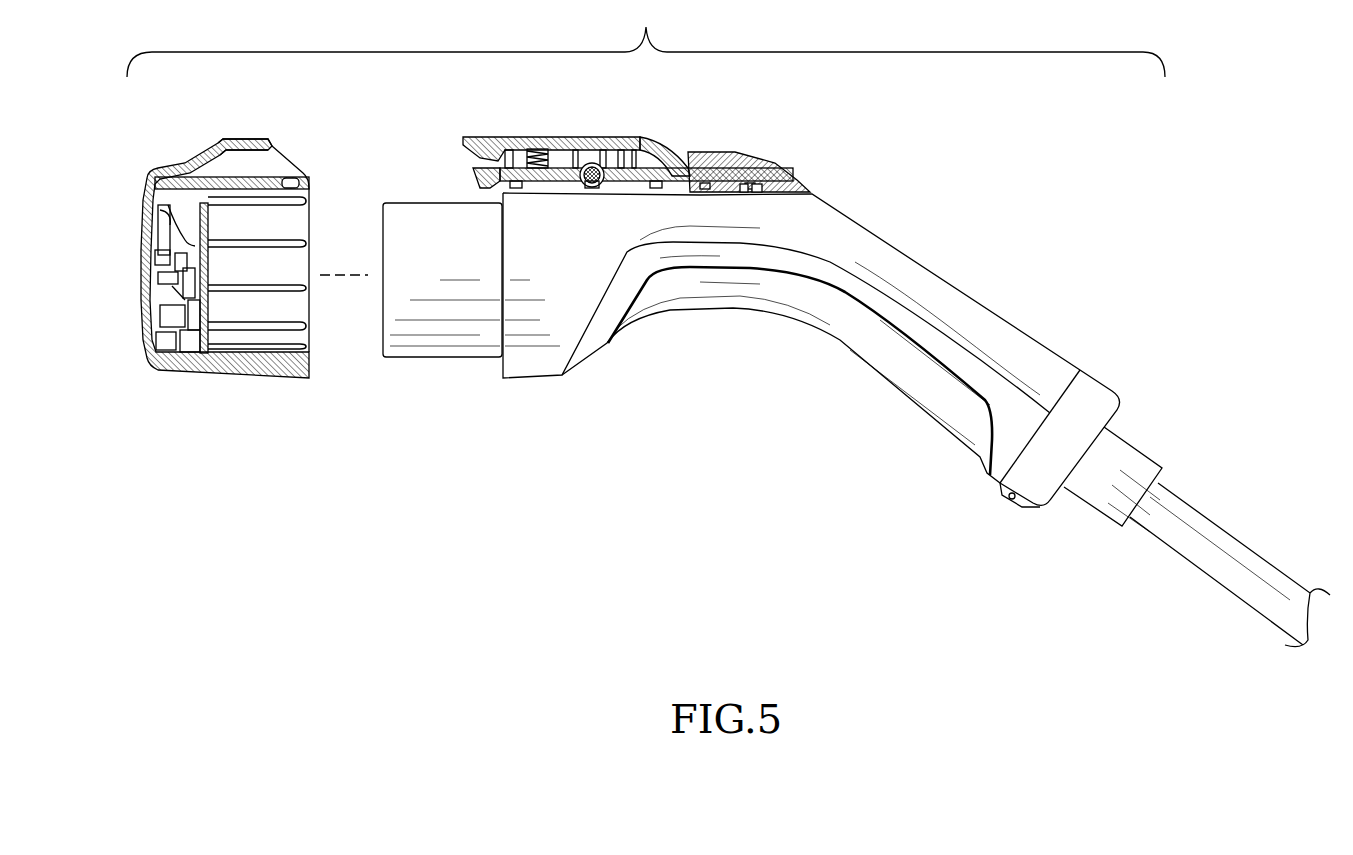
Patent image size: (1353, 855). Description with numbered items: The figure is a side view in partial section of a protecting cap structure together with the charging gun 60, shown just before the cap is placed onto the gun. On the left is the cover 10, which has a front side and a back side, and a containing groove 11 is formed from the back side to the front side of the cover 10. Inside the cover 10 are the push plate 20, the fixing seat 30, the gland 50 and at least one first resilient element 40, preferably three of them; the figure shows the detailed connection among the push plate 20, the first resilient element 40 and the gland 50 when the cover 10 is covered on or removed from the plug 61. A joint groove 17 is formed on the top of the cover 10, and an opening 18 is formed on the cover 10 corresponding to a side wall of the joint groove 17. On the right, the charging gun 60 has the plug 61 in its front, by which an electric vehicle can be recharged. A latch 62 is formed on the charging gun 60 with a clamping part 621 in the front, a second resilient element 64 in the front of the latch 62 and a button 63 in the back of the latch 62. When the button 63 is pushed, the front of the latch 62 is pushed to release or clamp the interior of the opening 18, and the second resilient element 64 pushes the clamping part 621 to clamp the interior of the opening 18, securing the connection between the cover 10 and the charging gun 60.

The cover 10 is at (160, 170).
The containing groove 11 is at (282, 277).
The joint groove 17 is at (252, 146).
The opening 18 is at (292, 177).
The push plate 20 is at (190, 360).
The fixing seat 30 is at (147, 262).
The first resilient element 40 is at (152, 234).
The gland 50 is at (208, 368).
The charging gun 60 is at (985, 302).
The plug 61 is at (478, 362).
The latch 62 is at (640, 142).
The clamping part 621 is at (472, 186).
The button 63 is at (770, 176).
The second resilient element 64 is at (540, 148).